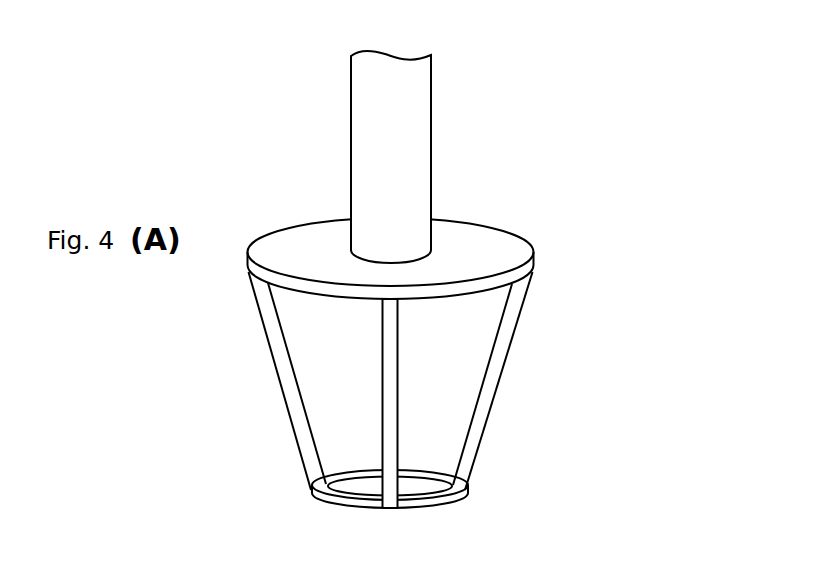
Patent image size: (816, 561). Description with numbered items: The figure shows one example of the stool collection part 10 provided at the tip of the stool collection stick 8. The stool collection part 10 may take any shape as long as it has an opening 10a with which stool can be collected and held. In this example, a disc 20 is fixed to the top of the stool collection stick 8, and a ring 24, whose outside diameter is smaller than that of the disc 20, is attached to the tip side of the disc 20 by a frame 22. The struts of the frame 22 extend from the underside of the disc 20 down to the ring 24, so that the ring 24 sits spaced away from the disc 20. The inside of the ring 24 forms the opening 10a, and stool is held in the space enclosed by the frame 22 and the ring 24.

The stool collection stick 8 is at (410, 135).
The stool collection part 10 is at (451, 364).
The opening 10a is at (412, 488).
The disc 20 is at (473, 238).
The frame 22 is at (507, 363).
The ring 24 is at (445, 485).